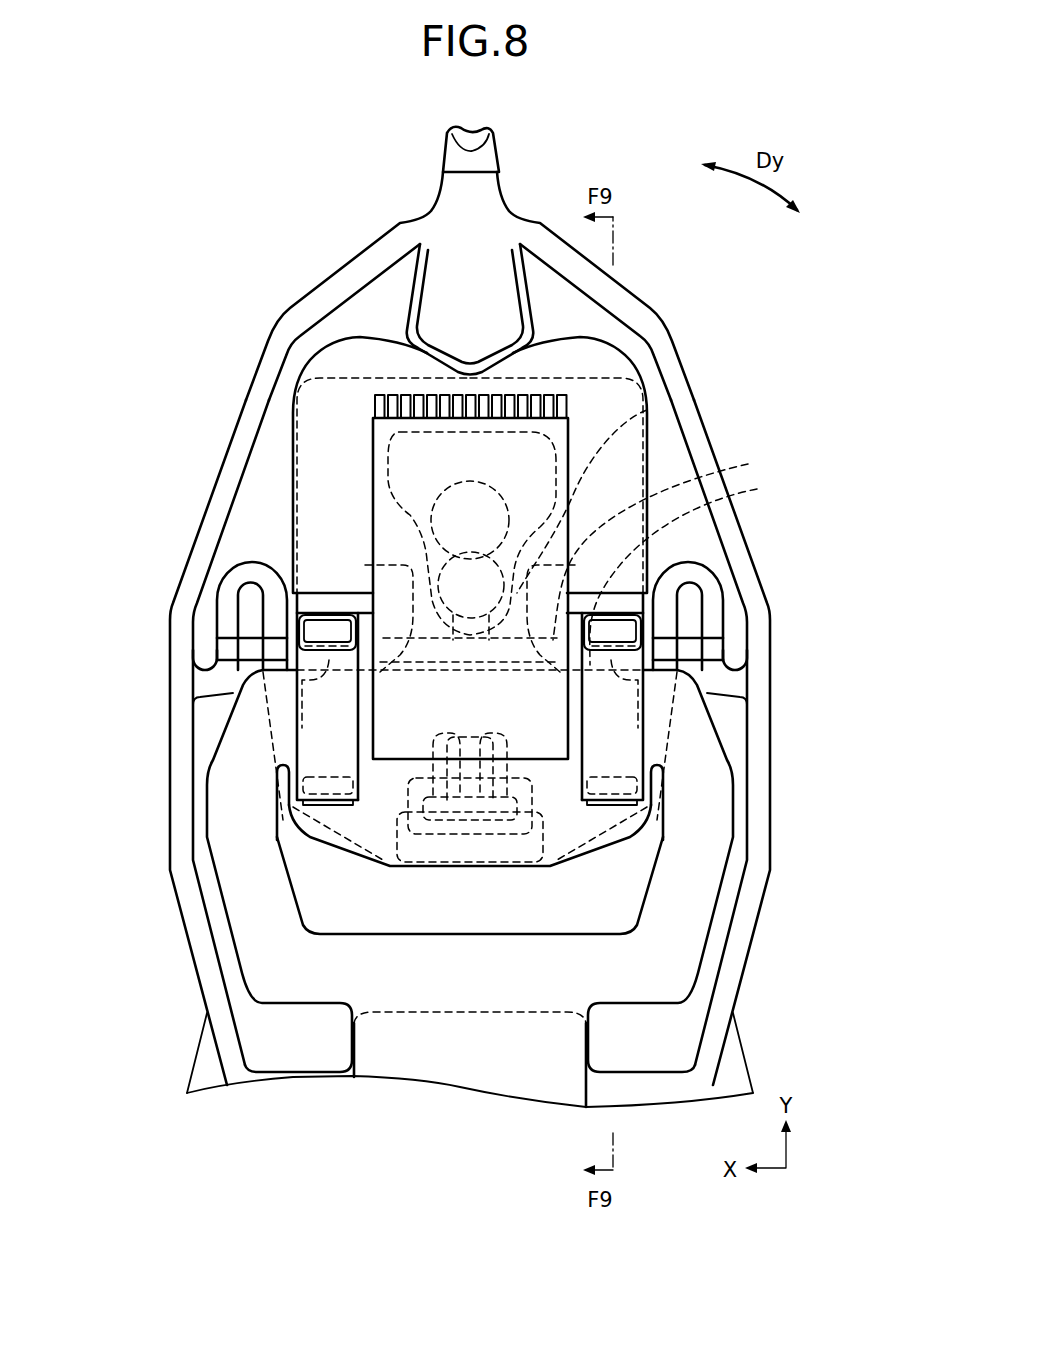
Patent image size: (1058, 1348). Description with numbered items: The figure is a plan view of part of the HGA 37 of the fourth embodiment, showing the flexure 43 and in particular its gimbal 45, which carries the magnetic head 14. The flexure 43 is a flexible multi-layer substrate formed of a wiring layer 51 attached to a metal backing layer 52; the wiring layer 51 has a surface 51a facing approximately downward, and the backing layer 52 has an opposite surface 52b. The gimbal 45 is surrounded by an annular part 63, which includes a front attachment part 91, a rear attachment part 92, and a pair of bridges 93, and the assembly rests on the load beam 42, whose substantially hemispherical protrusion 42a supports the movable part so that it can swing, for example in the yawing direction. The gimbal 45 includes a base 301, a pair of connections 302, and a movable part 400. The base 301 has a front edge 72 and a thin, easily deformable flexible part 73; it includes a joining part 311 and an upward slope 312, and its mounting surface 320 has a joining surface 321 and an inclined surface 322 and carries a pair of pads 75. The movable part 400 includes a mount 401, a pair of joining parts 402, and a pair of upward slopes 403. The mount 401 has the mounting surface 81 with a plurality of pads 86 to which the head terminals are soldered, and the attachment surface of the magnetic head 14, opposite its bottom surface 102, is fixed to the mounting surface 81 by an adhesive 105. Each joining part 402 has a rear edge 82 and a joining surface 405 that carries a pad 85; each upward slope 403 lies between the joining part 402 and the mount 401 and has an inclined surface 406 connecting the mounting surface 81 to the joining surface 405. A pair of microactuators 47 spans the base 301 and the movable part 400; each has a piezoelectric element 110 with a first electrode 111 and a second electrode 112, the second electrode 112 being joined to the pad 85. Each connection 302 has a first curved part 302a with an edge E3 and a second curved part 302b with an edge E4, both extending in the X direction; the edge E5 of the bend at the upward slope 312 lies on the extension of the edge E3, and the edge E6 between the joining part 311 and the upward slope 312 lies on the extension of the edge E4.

The HGA 37 is at (241, 246).
The front attachment part 91 is at (491, 193).
The flexure 43 is at (344, 286).
The gimbal 45 is at (331, 273).
The pads 86 is at (403, 397).
The wiring layer 51 is at (665, 334).
The surface 51a is at (588, 364).
The movable part 400 is at (286, 465).
The mount 401 is at (300, 363).
The mounting surface 81 is at (317, 398).
The adhesive 105 is at (386, 442).
The annular part 63 is at (219, 746).
The bridges 93 is at (240, 457).
The magnetic head 14 is at (372, 640).
The bottom surface 102 is at (385, 511).
The upward slope 312 is at (342, 561).
The inclined surface 322 is at (425, 640).
The pads 85 is at (330, 612).
The upward slopes 403 is at (463, 597).
The inclined surface 406 is at (252, 562).
The joining parts 402 is at (466, 608).
The joining surface 405 is at (248, 592).
The second electrode 112 is at (297, 607).
The connections 302 is at (255, 598).
The first curved part 302a is at (474, 639).
The edge E3 is at (218, 638).
The front edge 72 is at (260, 670).
The second curved part 302b is at (473, 682).
The edge E4 is at (228, 660).
The microactuator 47 is at (215, 697).
The rear edges 82 is at (286, 684).
The flexible part 73 is at (300, 742).
The piezoelectric element 110 is at (305, 768).
The first electrode 111 is at (303, 783).
The pads 75 is at (300, 815).
The base 301 is at (354, 890).
The joining part 311 is at (306, 852).
The mounting surface 320 is at (346, 886).
The joining surface 321 is at (333, 803).
The load beam 42 is at (186, 1076).
The rear attachment part 92 is at (343, 1078).
The protrusion 42a is at (647, 410).
The backing layer 52 is at (750, 746).
The surface 52b is at (700, 438).
The edge E5 is at (646, 525).
The edge E6 is at (687, 569).